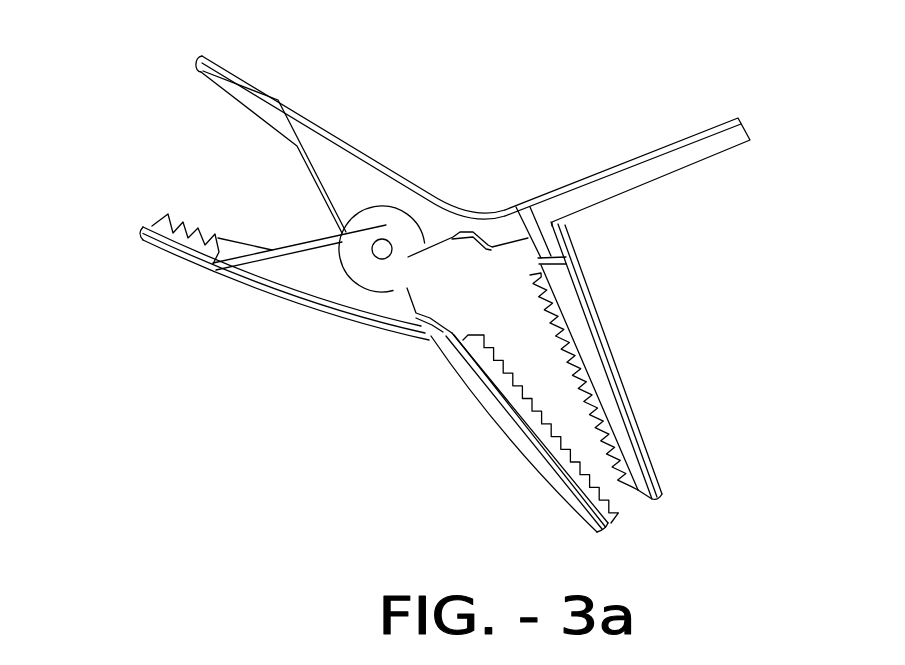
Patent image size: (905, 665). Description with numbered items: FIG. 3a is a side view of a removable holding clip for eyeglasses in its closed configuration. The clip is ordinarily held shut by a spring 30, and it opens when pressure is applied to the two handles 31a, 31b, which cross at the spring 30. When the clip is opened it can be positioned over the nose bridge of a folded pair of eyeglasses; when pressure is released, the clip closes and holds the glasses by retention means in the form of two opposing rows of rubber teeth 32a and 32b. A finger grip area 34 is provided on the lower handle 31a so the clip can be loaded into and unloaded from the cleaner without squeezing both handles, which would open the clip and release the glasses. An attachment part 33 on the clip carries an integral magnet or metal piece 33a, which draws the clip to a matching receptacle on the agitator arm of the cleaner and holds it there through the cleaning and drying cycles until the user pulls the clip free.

The spring 30 is at (379, 251).
The lower handle 31a is at (300, 287).
The handle 31b is at (330, 137).
The row of rubber teeth 32a is at (557, 457).
The row of rubber teeth 32b is at (585, 372).
The attachment part 33 is at (694, 165).
The magnet or metal piece 33a is at (647, 157).
The finger grip area 34 is at (176, 252).